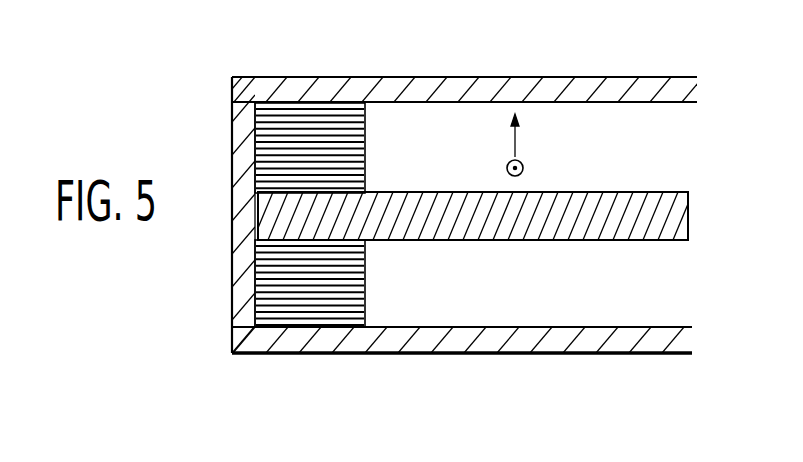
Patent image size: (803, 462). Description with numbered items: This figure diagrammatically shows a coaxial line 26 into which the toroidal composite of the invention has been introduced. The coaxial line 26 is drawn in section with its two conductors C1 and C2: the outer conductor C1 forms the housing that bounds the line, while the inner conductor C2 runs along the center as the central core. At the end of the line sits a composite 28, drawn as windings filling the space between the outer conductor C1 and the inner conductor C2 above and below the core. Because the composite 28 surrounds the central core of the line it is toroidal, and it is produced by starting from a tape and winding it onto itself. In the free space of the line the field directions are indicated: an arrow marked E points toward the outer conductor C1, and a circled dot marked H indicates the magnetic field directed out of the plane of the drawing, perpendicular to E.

The coaxial line 26 is at (552, 353).
The composite 28 is at (262, 312).
The conductor C1 is at (631, 85).
The conductor C2 is at (630, 207).
The electric field vector E is at (524, 134).
The magnetic field vector H is at (524, 168).